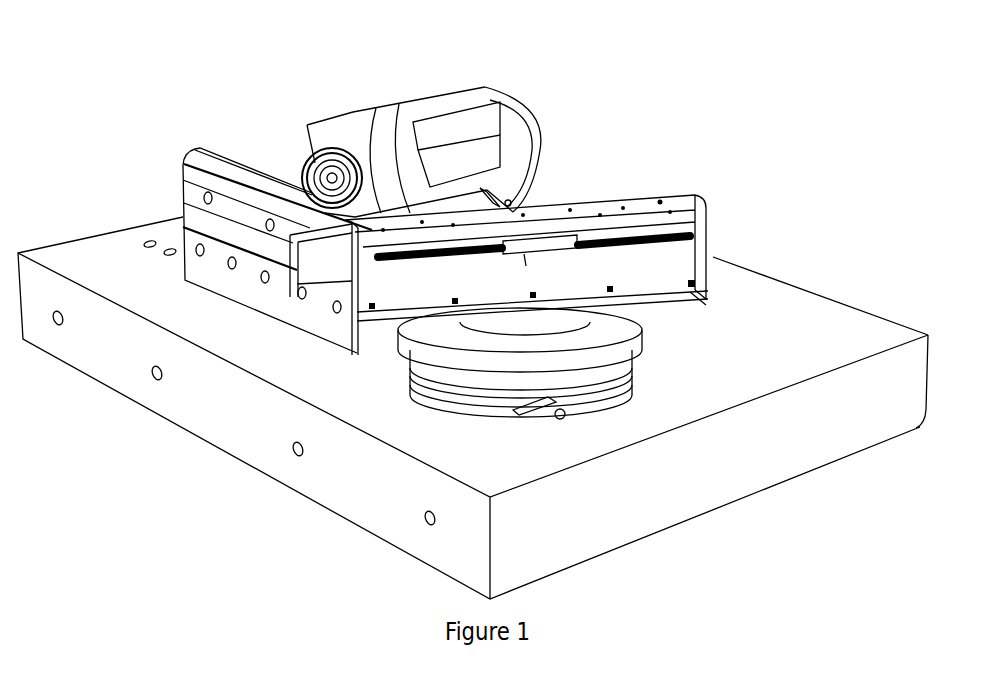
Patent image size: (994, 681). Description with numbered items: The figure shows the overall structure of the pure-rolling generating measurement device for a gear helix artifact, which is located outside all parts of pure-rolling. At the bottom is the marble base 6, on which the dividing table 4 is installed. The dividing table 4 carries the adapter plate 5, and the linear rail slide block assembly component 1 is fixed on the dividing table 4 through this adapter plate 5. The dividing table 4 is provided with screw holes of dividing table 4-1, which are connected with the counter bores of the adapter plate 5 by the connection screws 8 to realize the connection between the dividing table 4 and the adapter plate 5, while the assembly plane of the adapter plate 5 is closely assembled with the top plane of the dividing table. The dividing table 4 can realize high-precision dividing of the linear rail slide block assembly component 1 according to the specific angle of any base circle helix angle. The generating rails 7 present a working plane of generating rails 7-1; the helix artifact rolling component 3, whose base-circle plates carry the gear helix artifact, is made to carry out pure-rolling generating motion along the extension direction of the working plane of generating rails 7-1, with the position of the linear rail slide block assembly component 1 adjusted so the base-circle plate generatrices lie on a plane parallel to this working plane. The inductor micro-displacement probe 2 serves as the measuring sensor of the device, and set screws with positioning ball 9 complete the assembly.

The linear rail slide block assembly component 1 is at (577, 210).
The inductor micro-displacement probe 2 is at (487, 203).
The helix artifact rolling component 3 is at (425, 132).
The dividing table 4 is at (603, 331).
The screw holes of dividing table 4-1 is at (547, 322).
The adapter plate 5 is at (697, 297).
The marble base 6 is at (828, 332).
The generating rails 7 is at (240, 212).
The working plane of generating rails 7-1 is at (235, 168).
The connection screws 8 is at (690, 283).
The set screws with positioning ball 9 is at (660, 200).